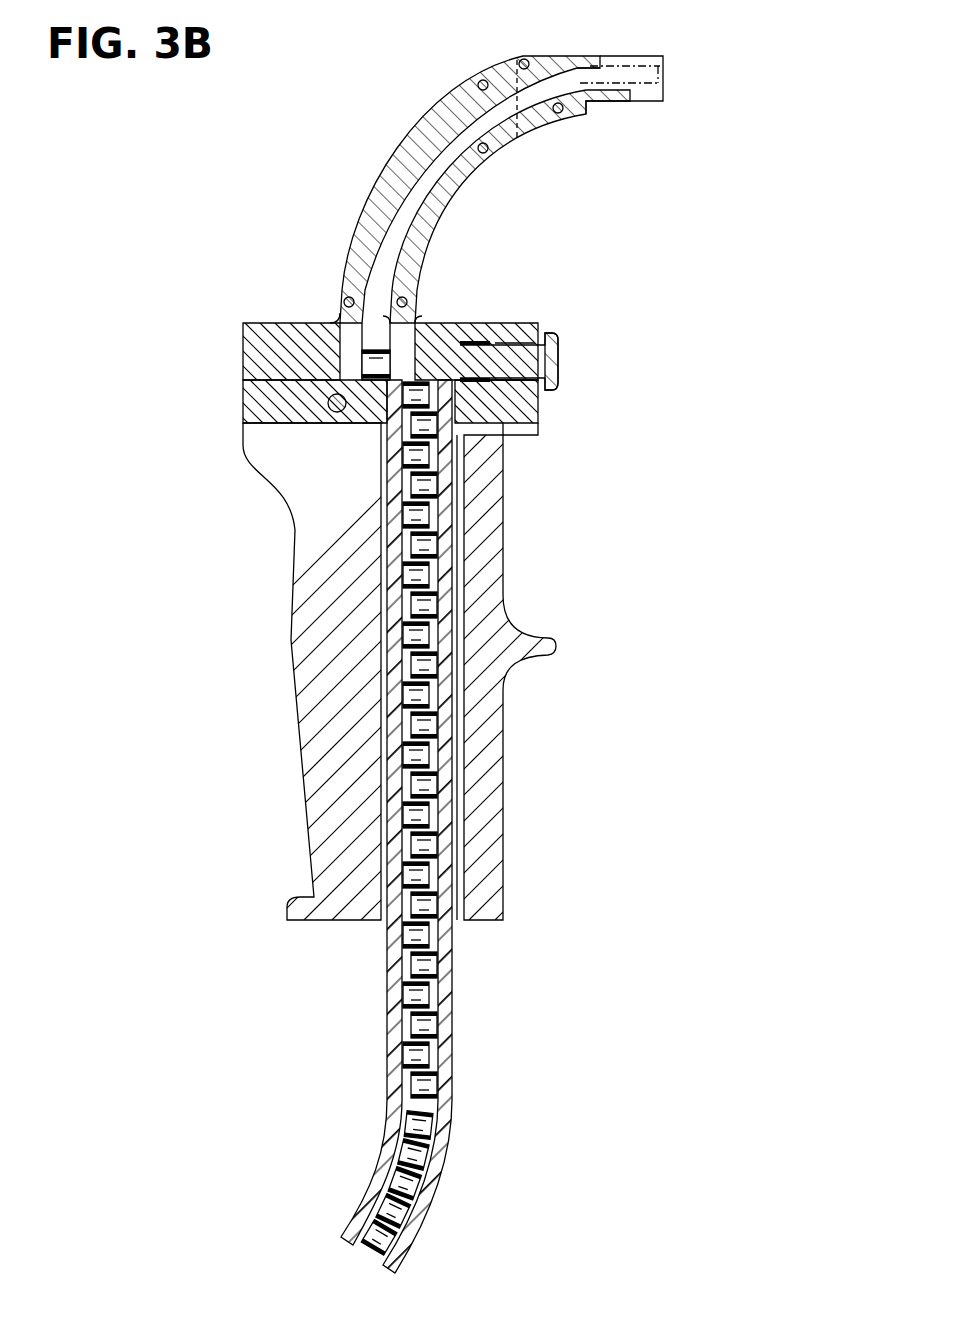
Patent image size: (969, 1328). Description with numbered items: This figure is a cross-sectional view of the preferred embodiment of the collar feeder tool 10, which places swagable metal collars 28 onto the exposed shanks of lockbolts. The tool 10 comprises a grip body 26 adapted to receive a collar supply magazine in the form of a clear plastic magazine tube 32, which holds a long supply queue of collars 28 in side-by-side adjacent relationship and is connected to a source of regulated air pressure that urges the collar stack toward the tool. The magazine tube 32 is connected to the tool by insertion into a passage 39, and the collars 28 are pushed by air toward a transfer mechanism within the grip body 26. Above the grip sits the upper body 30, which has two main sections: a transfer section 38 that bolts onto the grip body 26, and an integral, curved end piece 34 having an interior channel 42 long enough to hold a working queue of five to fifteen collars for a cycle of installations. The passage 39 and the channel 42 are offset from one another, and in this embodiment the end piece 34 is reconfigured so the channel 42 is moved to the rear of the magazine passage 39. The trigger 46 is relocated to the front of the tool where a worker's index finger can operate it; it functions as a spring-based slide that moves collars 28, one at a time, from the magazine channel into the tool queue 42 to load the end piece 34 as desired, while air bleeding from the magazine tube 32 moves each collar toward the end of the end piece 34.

The feeder tool 10 is at (560, 511).
The grip body 26 is at (290, 668).
The collars 28 is at (417, 1110).
The upper body 30 is at (243, 408).
The magazine tube 32 is at (455, 1048).
The end piece 34 is at (363, 203).
The transfer section 38 is at (280, 323).
The magazine passage 39 is at (463, 805).
The interior channel 42 is at (444, 168).
The trigger 46 is at (562, 357).